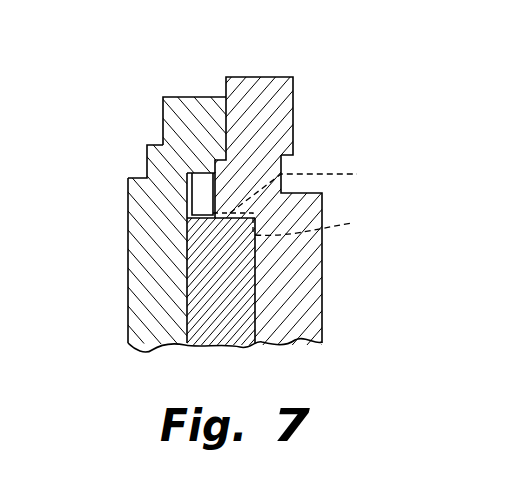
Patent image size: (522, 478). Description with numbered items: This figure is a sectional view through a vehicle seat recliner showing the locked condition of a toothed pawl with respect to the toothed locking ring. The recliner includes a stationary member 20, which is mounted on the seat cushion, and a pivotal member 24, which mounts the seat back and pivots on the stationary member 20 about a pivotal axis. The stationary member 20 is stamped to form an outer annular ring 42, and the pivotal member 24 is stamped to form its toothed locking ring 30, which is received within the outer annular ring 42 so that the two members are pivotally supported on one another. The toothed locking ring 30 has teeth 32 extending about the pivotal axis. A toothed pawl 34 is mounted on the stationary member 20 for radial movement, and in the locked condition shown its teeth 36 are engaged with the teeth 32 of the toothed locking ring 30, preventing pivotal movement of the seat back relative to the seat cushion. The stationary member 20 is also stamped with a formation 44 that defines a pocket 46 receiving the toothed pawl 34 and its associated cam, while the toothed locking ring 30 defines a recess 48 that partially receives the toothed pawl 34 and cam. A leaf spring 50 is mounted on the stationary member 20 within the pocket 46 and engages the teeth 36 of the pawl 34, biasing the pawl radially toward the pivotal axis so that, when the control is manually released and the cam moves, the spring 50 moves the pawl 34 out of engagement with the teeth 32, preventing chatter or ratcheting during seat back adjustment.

The stationary member 20 is at (158, 320).
The pivotal member 24 is at (290, 263).
The toothed locking ring 30 is at (223, 160).
The teeth 32 is at (319, 224).
The toothed pawl 34 is at (205, 285).
The teeth 36 is at (298, 200).
The outer annular ring 42 is at (225, 112).
The formation 44 is at (147, 177).
The pocket 46 is at (200, 263).
The recess 48 is at (243, 302).
The spring 50 is at (197, 207).